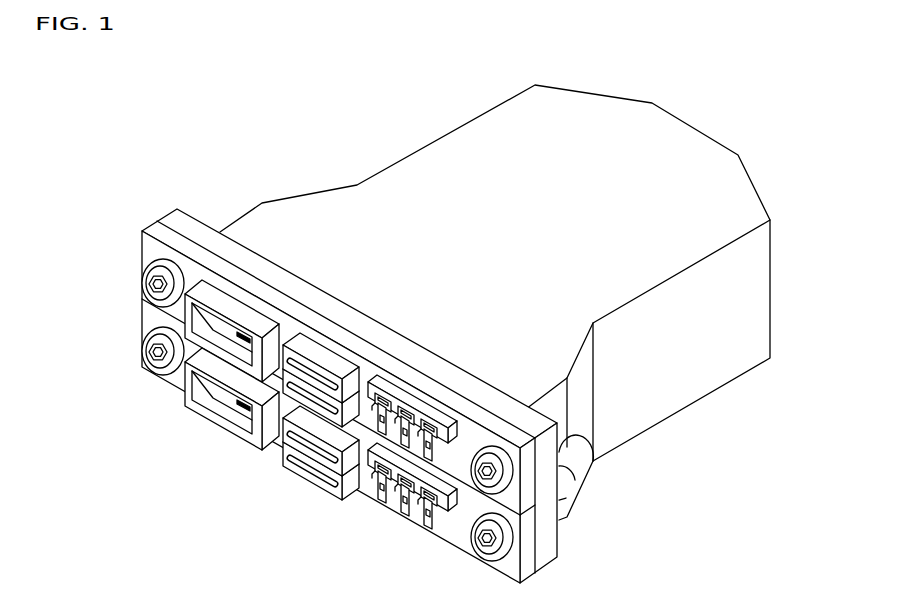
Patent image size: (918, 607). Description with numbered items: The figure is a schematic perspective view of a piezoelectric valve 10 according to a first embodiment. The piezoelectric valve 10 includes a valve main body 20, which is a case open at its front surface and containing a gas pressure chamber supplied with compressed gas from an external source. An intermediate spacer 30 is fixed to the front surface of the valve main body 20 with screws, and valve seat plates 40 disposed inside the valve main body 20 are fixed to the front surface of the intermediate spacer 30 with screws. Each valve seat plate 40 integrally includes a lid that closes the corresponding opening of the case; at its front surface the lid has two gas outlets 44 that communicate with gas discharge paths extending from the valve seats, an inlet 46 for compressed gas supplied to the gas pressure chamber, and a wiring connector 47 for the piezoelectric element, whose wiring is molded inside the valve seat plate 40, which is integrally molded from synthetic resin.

The piezoelectric valve 10 is at (327, 97).
The valve main body 20 is at (652, 155).
The intermediate spacer 30 is at (174, 207).
The valve seat plate 40 is at (135, 261).
The gas outlet 44 is at (307, 463).
The inlet 46 is at (220, 398).
The wiring connector 47 is at (397, 503).